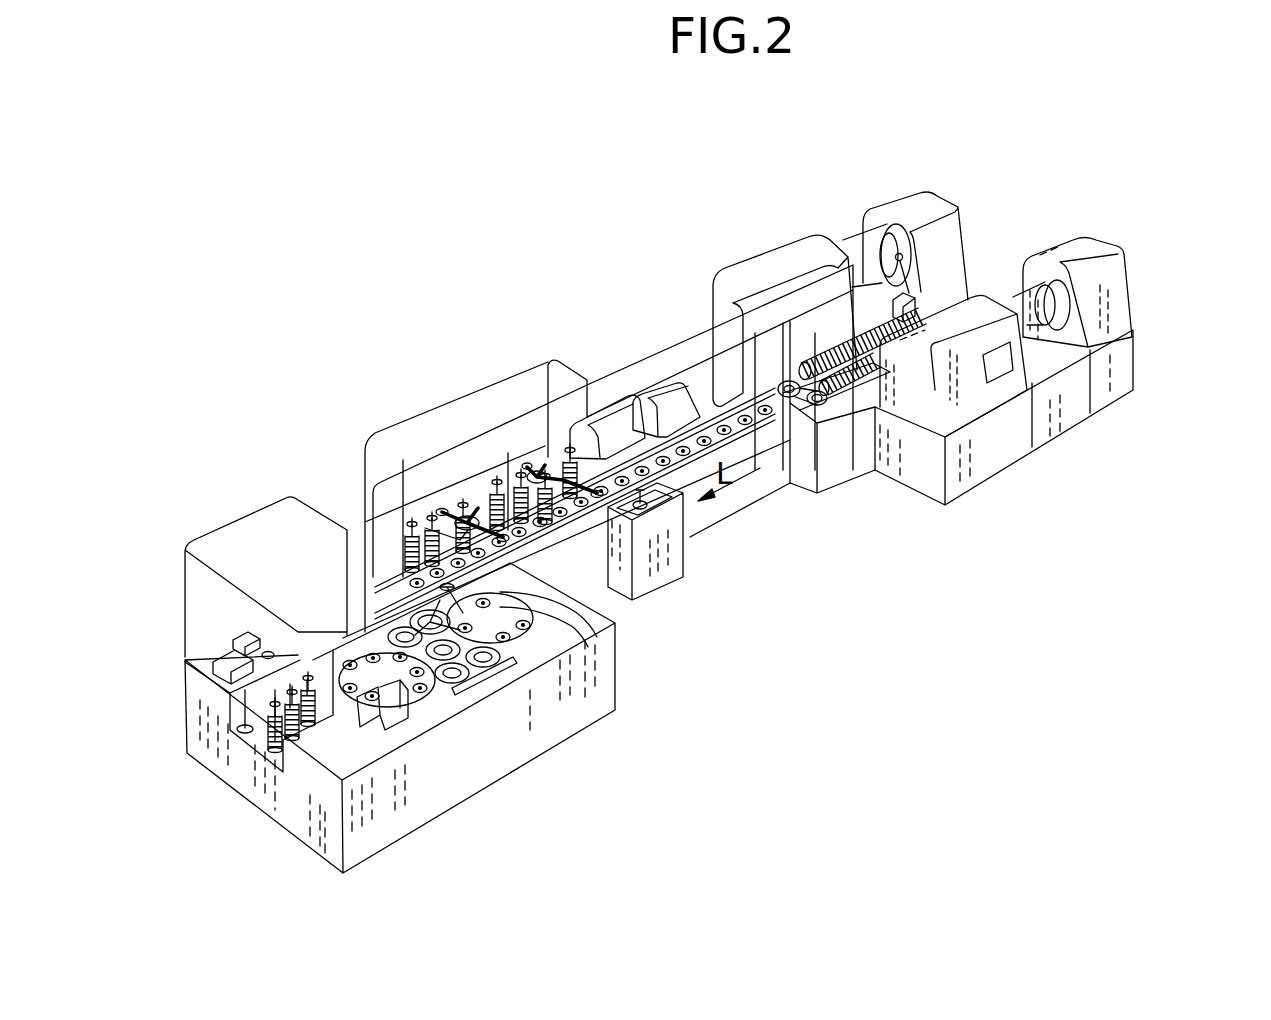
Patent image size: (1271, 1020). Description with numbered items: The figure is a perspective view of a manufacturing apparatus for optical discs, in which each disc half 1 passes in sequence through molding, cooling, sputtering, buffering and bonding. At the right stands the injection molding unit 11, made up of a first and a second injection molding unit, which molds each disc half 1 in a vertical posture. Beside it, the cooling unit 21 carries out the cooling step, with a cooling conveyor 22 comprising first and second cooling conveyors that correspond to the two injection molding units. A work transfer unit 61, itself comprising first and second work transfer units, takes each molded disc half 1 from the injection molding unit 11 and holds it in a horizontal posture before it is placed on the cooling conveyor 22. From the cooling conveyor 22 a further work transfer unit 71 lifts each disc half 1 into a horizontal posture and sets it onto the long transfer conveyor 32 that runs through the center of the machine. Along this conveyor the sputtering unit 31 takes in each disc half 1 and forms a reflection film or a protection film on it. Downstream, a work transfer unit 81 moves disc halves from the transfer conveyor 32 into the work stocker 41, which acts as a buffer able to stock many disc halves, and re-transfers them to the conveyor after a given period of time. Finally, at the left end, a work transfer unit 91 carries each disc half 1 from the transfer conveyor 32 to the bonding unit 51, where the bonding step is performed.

The disc half 1 is at (547, 460).
The injection molding unit 11 is at (1127, 307).
The cooling unit 21 is at (970, 237).
The cooling conveyor 22 is at (837, 405).
The sputtering unit 31 is at (657, 393).
The transfer conveyor 32 is at (748, 432).
The work stocker 41 is at (460, 507).
The bonding unit 51 is at (480, 667).
The work transfer unit 61 is at (913, 262).
The work transfer unit 71 is at (808, 405).
The work transfer unit 81 is at (540, 470).
The work transfer unit 91 is at (485, 580).